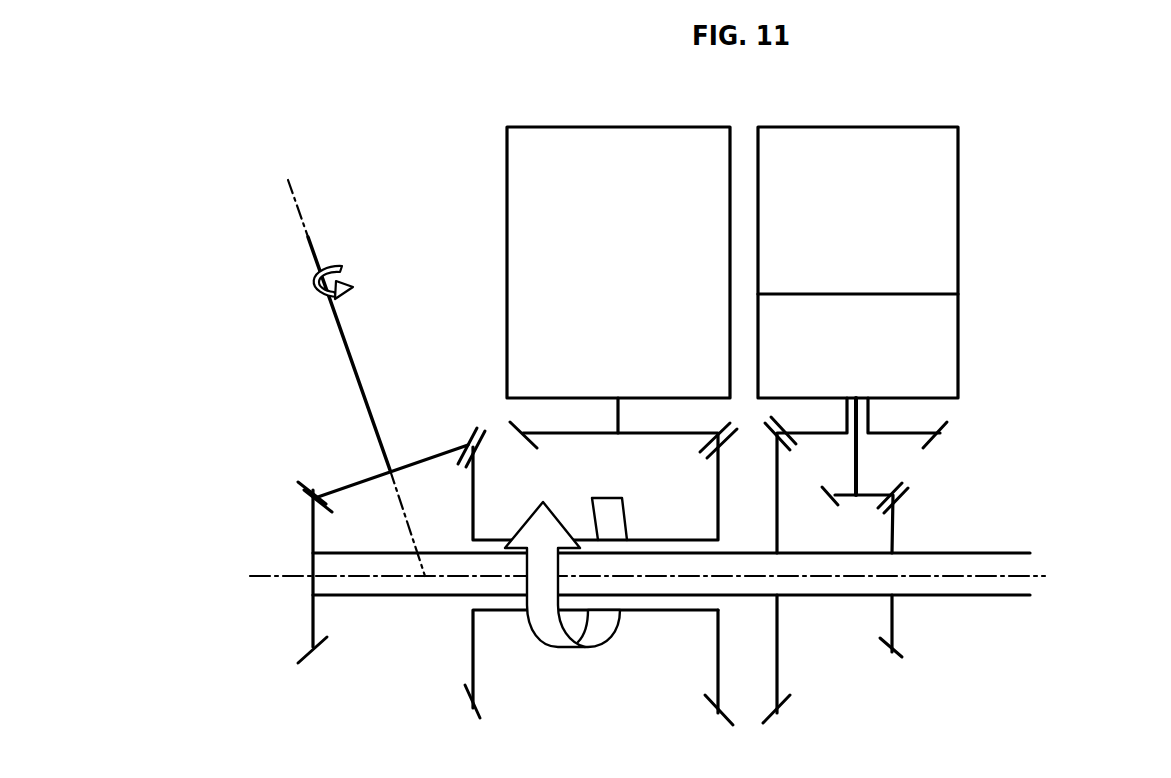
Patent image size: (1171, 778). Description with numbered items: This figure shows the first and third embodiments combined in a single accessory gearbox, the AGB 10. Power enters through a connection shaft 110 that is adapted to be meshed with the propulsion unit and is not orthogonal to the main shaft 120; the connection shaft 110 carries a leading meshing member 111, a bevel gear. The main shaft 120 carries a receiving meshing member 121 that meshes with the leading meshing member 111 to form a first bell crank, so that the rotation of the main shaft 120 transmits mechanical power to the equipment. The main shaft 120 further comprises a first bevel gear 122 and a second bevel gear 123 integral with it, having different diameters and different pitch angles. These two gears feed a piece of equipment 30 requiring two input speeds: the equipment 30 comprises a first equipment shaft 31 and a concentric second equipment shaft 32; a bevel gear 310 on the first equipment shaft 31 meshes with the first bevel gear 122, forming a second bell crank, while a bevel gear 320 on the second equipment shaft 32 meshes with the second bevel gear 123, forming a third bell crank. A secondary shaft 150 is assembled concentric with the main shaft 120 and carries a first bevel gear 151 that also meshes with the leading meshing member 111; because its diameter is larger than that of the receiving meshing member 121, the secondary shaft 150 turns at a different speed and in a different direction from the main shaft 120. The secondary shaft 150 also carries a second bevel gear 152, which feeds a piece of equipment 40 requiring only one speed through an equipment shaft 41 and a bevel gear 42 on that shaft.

The AGB 10 is at (1102, 371).
The equipment 30 is at (965, 232).
The first equipment shaft 31 is at (870, 418).
The second equipment shaft 32 is at (854, 455).
The equipment 40 is at (619, 116).
The equipment shaft 41 is at (618, 415).
The bevel gear 42 is at (525, 450).
The connection shaft 110 is at (360, 372).
The leading meshing member 111 is at (362, 478).
The main shaft 120 is at (997, 552).
The receiving meshing member 121 is at (312, 530).
The first bevel gear 122 is at (776, 718).
The second bevel gear 123 is at (900, 655).
The secondary shaft 150 is at (655, 538).
The first bevel gear 151 is at (468, 714).
The second bevel gear 152 is at (718, 718).
The bevel gear 310 is at (943, 430).
The bevel gear 320 is at (895, 482).